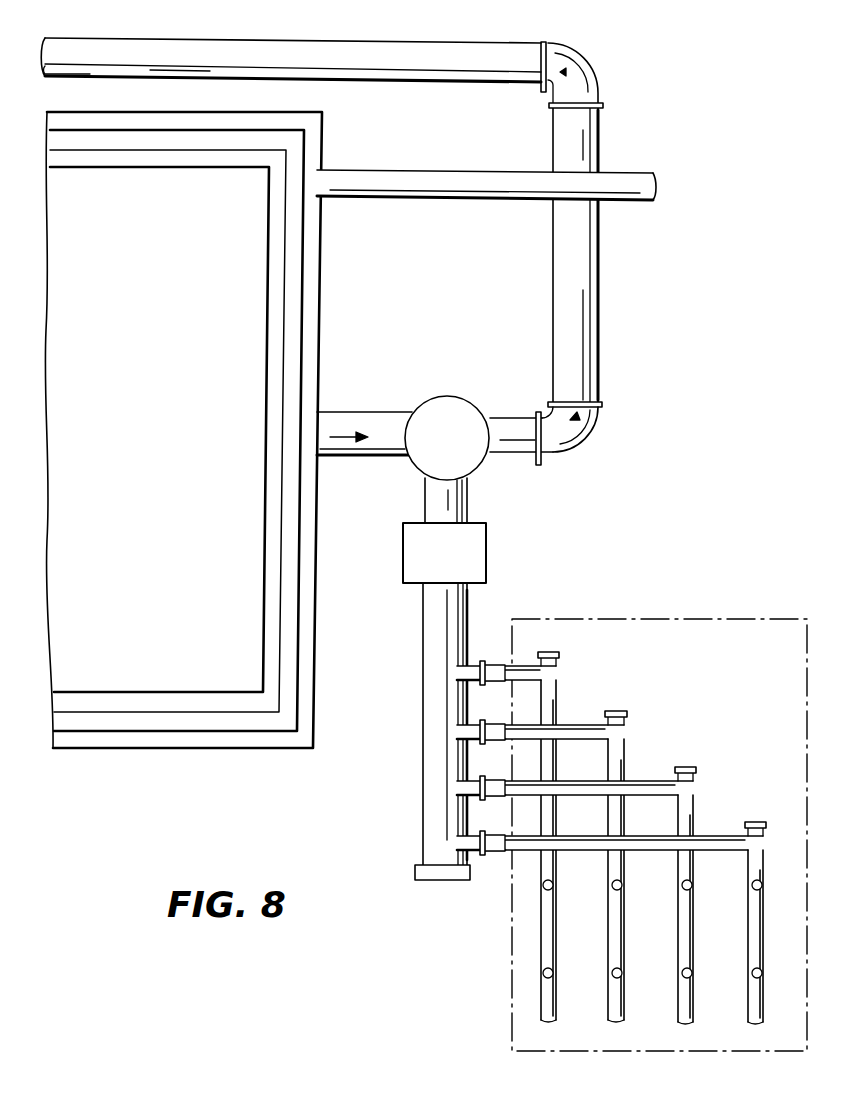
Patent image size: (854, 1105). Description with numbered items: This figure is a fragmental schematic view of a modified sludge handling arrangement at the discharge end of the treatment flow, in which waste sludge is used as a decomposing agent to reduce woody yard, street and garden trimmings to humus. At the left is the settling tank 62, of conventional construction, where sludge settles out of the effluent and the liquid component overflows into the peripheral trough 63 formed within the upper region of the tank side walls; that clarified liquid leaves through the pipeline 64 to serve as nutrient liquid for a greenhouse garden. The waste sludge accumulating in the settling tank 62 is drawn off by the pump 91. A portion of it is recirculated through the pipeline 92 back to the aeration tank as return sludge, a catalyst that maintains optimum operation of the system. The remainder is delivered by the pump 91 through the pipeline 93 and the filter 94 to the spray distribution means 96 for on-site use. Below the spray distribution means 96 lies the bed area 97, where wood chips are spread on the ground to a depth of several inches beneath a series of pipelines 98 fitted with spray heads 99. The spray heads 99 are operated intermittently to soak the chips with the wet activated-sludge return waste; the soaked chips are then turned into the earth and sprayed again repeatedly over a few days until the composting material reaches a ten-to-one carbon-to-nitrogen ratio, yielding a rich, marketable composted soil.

The settling tank 62 is at (257, 742).
The peripheral trough 63 is at (120, 722).
The pipeline 64 is at (461, 198).
The pump 91 is at (445, 397).
The pipeline 92 is at (307, 44).
The pipeline 93 is at (467, 492).
The filter 94 is at (402, 551).
The spray distribution means 96 is at (418, 747).
The bed area 97 is at (700, 619).
The pipelines 98 is at (613, 925).
The spray heads 99 is at (612, 886).